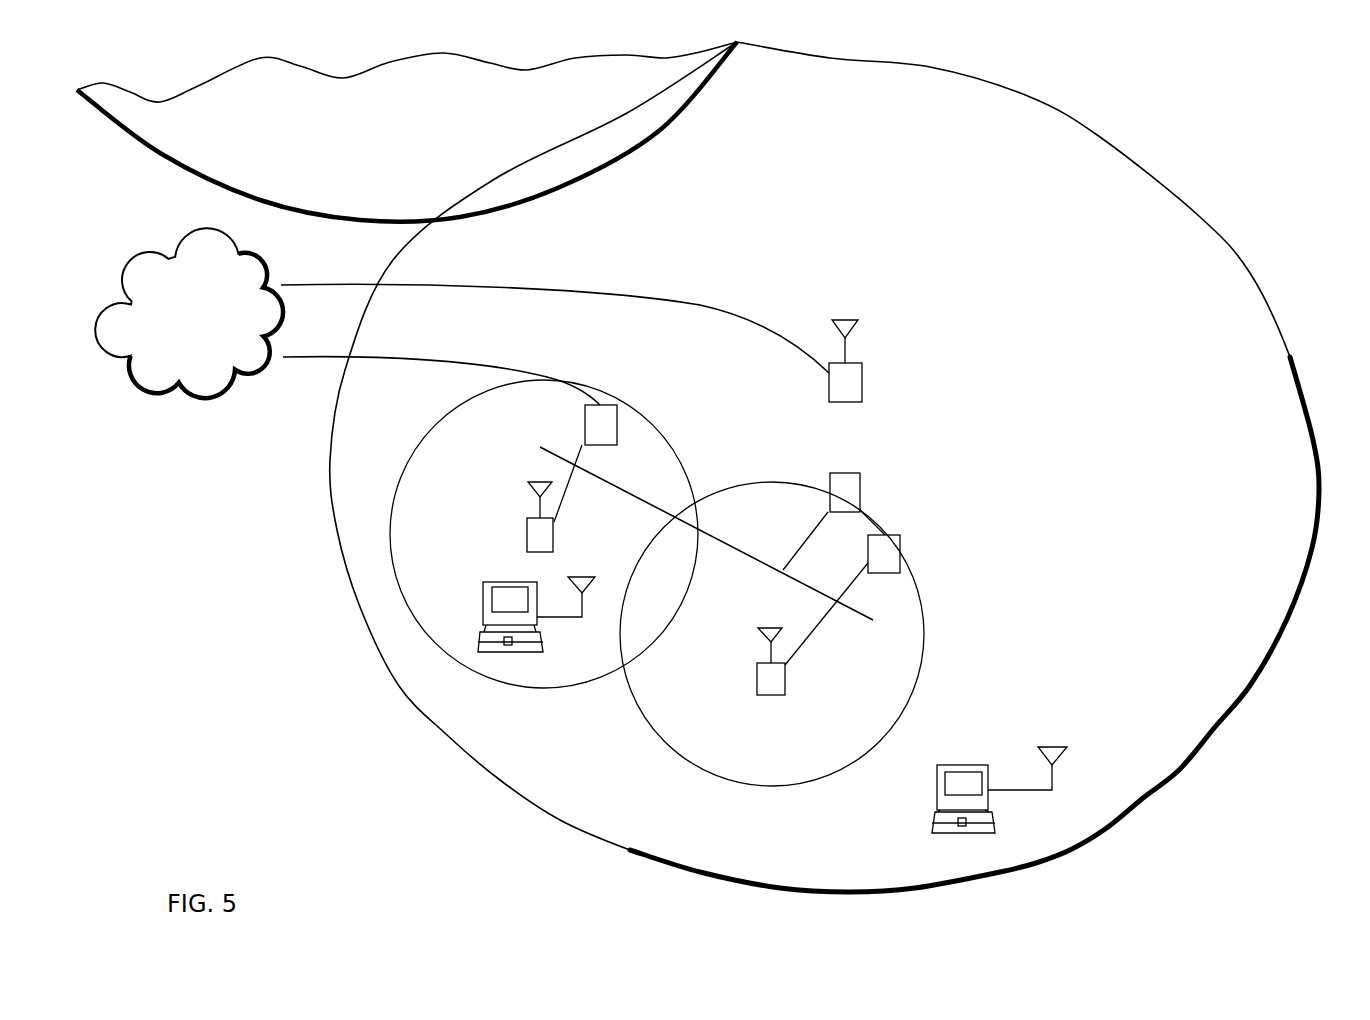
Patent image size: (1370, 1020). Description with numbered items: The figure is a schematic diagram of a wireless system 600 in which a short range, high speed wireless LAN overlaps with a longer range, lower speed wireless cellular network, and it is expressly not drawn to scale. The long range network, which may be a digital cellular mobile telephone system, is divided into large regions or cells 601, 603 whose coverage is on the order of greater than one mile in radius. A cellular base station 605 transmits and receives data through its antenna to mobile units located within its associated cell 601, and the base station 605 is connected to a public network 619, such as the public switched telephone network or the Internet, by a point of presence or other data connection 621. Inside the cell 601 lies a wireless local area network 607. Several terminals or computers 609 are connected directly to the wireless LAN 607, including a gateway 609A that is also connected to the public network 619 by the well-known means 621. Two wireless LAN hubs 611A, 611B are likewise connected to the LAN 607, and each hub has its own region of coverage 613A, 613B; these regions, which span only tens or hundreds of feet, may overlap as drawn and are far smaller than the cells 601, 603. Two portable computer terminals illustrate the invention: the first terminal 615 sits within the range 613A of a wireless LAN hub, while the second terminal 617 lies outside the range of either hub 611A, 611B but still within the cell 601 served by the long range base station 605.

The wireless network system 600 is at (1230, 120).
The cell 601 is at (880, 163).
The cell 603 is at (372, 166).
The cellular base station 605 is at (862, 372).
The wireless local area network 607 is at (858, 611).
The terminals or computers 609 is at (860, 480).
The gateway 609A is at (617, 410).
The wireless LAN hub 611A is at (527, 534).
The wireless LAN hub 611B is at (757, 680).
The region of coverage 613A is at (518, 438).
The region of coverage 613B is at (745, 753).
The first terminal 615 is at (482, 602).
The second terminal 617 is at (933, 820).
The public network 619 is at (172, 326).
The data connection 621 is at (578, 288).